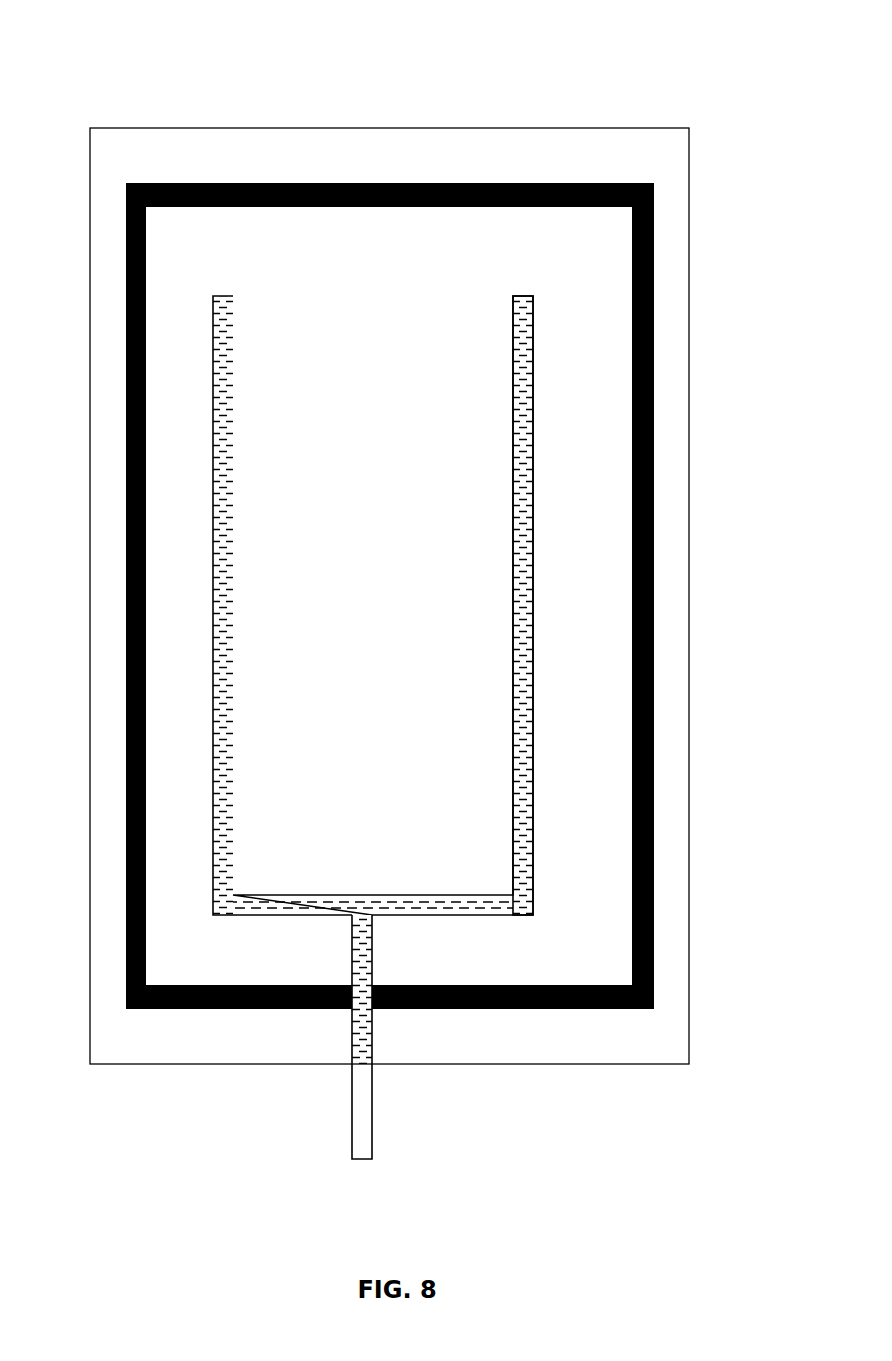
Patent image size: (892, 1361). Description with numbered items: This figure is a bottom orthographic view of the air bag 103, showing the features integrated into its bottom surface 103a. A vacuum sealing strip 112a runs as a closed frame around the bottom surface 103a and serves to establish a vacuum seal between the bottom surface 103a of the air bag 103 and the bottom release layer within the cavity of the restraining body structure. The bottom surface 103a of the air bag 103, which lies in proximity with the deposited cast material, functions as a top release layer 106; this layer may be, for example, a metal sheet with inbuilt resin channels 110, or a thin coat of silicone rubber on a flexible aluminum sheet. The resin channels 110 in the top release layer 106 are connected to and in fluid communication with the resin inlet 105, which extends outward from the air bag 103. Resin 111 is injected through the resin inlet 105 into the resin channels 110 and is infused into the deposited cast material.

The air bag 103 is at (184, 127).
The bottom surface 103a is at (654, 145).
The top release layer 106 is at (349, 107).
The vacuum sealing strip 112a is at (146, 242).
The resin channels 110 is at (373, 605).
The resin 111 is at (530, 650).
The resin inlet 105 is at (373, 1127).